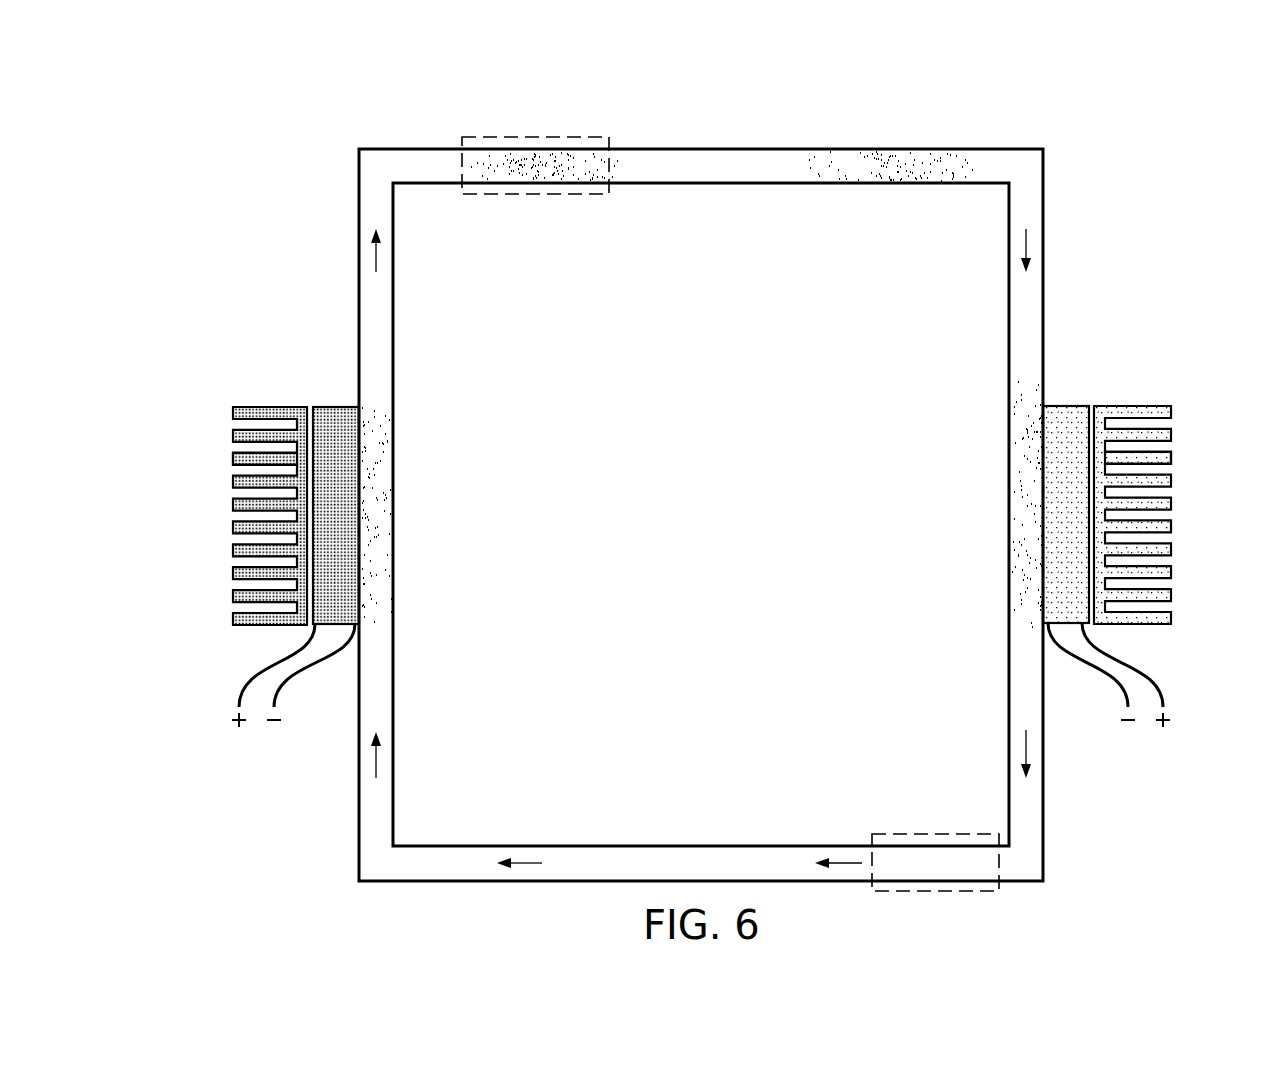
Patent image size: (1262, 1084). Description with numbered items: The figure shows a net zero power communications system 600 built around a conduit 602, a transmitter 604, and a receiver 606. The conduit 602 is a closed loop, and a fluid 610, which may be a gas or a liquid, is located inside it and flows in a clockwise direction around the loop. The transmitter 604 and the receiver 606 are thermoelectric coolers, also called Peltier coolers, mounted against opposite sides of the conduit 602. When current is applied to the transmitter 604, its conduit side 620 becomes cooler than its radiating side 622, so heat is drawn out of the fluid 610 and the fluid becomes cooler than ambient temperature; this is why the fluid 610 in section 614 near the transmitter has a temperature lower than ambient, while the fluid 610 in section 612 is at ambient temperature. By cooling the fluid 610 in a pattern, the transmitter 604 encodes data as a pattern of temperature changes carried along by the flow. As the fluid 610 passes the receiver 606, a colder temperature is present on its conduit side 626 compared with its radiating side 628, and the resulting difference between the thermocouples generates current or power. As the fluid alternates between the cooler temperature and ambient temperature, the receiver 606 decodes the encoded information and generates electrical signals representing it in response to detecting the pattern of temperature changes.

The net zero power communications system 600 is at (302, 102).
The conduit 602 is at (417, 147).
The transmitter 604 is at (256, 405).
The receiver 606 is at (1147, 405).
The fluid 610 is at (997, 158).
The section 612 is at (935, 893).
The section 614 is at (522, 135).
The conduit side 620 is at (333, 407).
The radiating side 622 is at (233, 455).
The conduit side 626 is at (1070, 405).
The radiating side 628 is at (1171, 455).